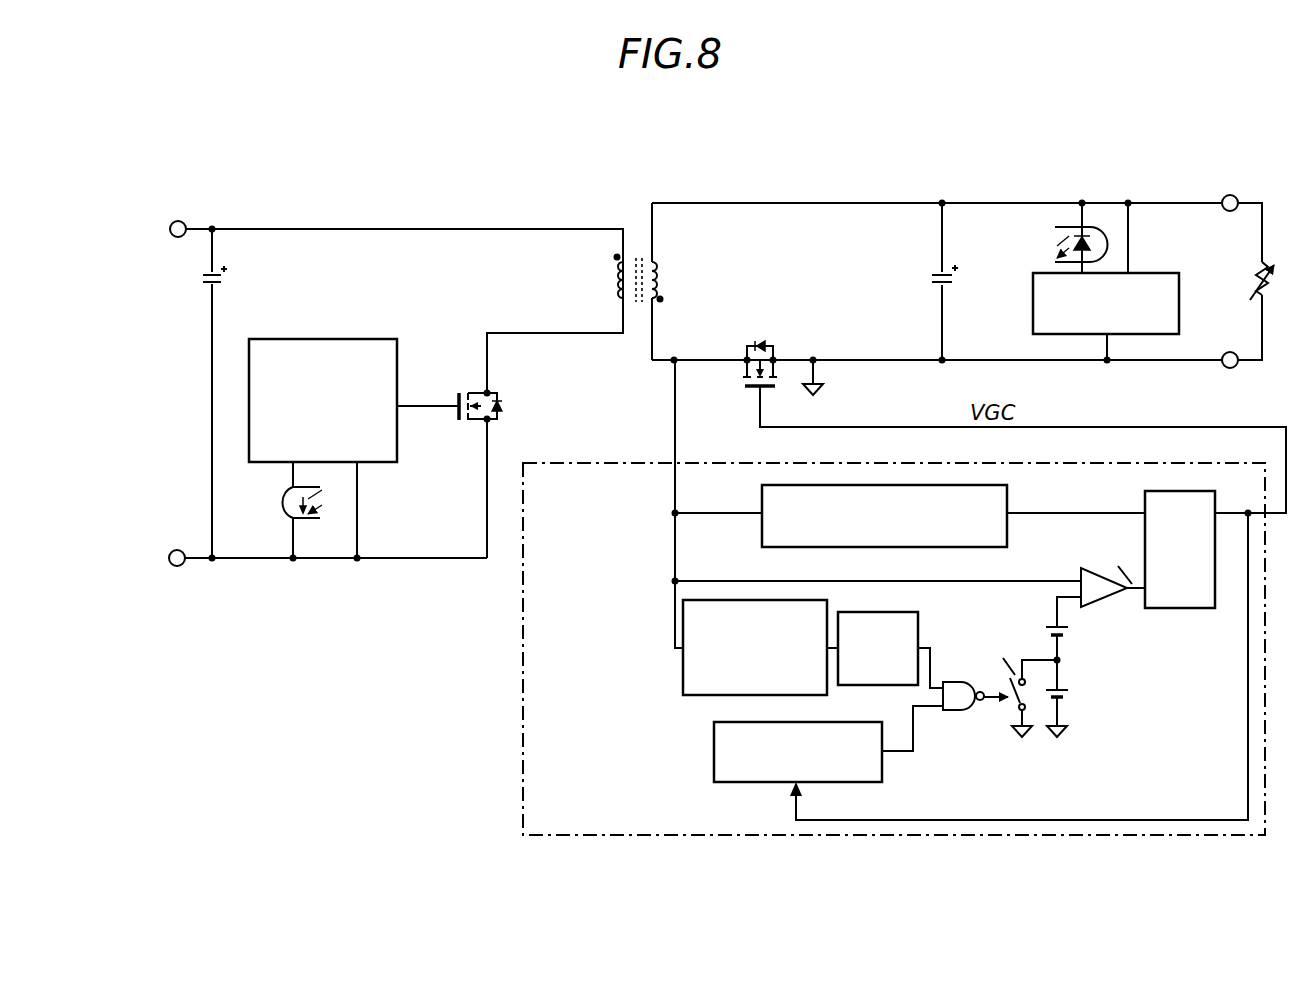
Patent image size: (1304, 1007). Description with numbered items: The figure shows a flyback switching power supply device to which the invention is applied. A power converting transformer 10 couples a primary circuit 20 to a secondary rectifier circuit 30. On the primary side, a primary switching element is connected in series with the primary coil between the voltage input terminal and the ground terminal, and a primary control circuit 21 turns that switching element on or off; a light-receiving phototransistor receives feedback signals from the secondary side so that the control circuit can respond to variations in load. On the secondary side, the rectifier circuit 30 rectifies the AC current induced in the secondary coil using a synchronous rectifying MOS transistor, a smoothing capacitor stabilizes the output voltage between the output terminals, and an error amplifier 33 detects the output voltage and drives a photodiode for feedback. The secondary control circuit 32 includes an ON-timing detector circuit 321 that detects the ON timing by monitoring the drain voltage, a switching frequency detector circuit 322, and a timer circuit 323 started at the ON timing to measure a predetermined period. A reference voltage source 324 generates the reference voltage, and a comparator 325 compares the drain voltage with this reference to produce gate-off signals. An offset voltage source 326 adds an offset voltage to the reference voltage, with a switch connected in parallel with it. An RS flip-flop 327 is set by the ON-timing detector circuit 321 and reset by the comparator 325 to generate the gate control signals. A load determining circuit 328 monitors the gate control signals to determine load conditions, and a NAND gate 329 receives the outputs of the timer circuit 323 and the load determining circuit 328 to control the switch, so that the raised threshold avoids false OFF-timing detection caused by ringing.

The power converting transformer 10 is at (634, 200).
The primary circuit 20 is at (334, 600).
The primary control circuit 21 is at (318, 338).
The secondary rectifier circuit 30 is at (1018, 160).
The secondary control circuit 32 is at (521, 578).
The error amplifier 33 is at (1032, 306).
The ON-timing detector circuit 321 is at (1008, 501).
The switching frequency detector circuit 322 is at (689, 697).
The timer circuit 323 is at (915, 625).
The reference voltage source 324 is at (1038, 627).
The comparator 325 is at (1080, 572).
The offset voltage source 326 is at (1072, 705).
The RS flip-flop 327 is at (1183, 610).
The load determining circuit 328 is at (712, 765).
The NAND gate 329 is at (955, 715).